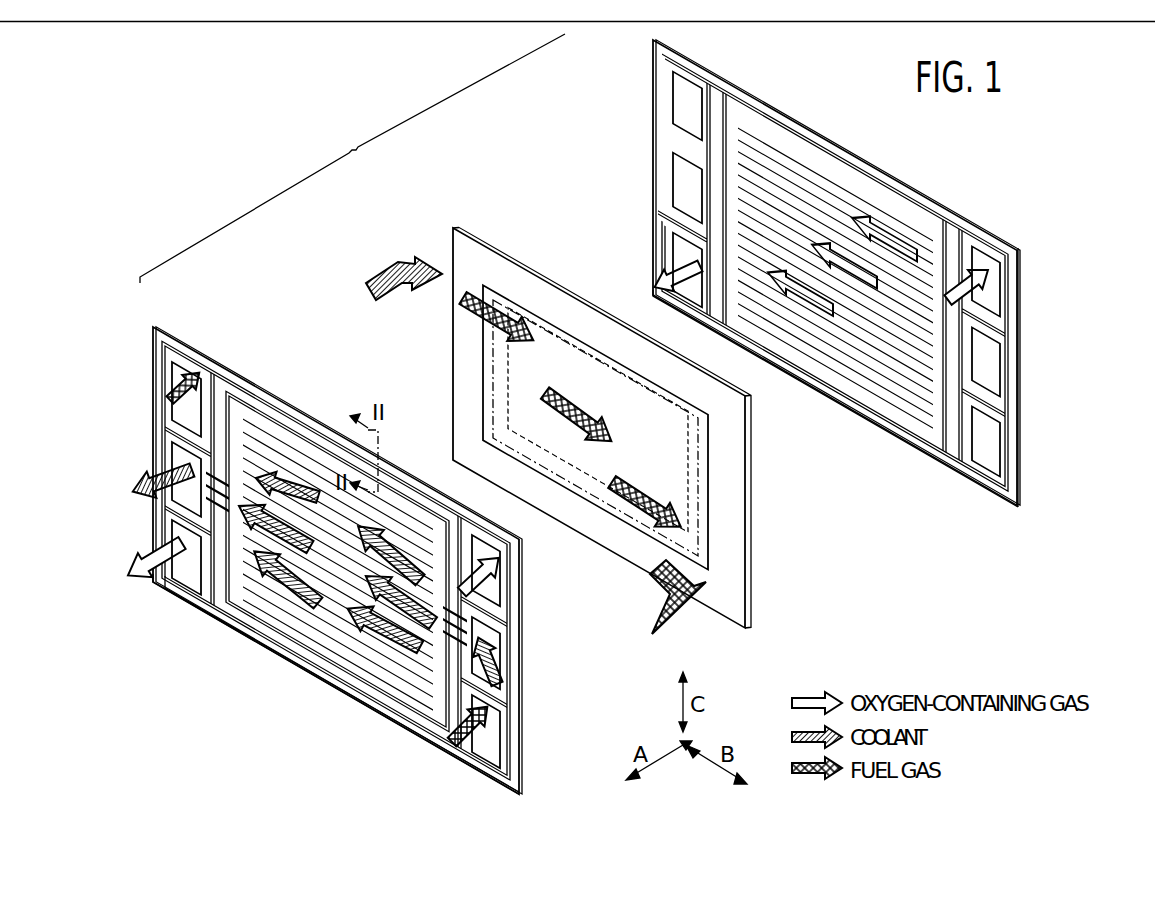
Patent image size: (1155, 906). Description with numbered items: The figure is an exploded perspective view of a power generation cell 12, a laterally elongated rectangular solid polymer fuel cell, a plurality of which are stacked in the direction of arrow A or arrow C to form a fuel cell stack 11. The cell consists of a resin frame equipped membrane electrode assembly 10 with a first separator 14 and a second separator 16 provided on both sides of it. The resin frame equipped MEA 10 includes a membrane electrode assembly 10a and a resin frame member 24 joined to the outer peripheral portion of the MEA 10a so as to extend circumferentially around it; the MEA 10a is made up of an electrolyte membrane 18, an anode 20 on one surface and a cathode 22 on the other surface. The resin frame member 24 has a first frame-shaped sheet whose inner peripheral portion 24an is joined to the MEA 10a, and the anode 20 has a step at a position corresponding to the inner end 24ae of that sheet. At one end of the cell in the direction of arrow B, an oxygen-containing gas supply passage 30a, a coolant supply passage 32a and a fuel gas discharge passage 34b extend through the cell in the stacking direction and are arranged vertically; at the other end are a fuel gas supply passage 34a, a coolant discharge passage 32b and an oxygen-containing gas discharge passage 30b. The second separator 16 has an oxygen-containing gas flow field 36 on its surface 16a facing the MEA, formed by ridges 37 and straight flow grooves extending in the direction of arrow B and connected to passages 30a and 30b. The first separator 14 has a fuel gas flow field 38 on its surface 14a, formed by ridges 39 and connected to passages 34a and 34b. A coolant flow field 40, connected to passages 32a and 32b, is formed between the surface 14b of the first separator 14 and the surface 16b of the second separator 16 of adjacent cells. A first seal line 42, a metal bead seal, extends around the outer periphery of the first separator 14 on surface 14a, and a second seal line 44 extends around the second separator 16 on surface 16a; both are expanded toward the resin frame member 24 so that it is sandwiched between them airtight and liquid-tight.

The resin frame equipped membrane electrode assembly 10 is at (587, 390).
The membrane electrode assembly 10a is at (578, 492).
The fuel cell stack 11 is at (1019, 136).
The power generation cell 12 is at (352, 158).
The first separator 14 is at (321, 534).
The surface of the first separator 14a is at (165, 582).
The surface of the first separator 14b is at (190, 592).
The second separator 16 is at (790, 306).
The surface of the second separator 16a is at (985, 476).
The surface of the second separator 16b is at (998, 482).
The electrolyte membrane 18 is at (665, 478).
The anode 20 is at (490, 413).
The cathode 22 is at (700, 515).
The resin frame member 24 is at (505, 238).
The inner end of the first frame-shaped sheet 24ae is at (513, 390).
The inner peripheral portion of the first frame-shaped sheet 24an is at (565, 350).
The oxygen-containing gas supply passage 30a is at (490, 580).
The oxygen-containing gas discharge passage 30b is at (180, 530).
The coolant supply passage 32a is at (497, 628).
The coolant discharge passage 32b is at (182, 455).
The fuel gas supply passage 34a is at (185, 388).
The fuel gas discharge passage 34b is at (490, 718).
The oxygen-containing gas flow field 36 is at (805, 178).
The ridges 37 is at (857, 365).
The fuel gas flow field 38 is at (298, 450).
The ridges 39 is at (347, 652).
The coolant flow field 40 is at (276, 610).
The first seal line 42 is at (250, 381).
The second seal line 44 is at (662, 208).